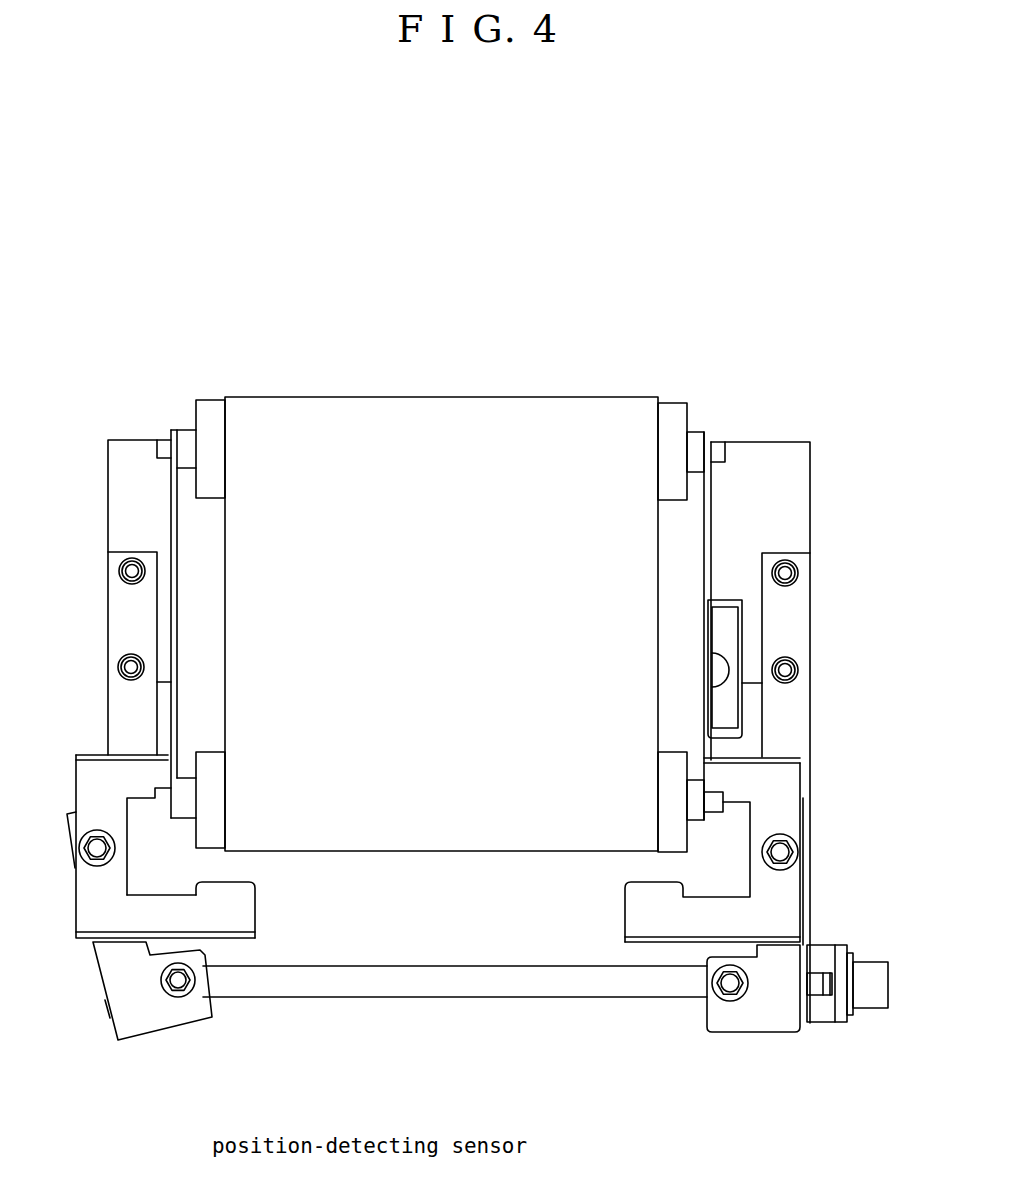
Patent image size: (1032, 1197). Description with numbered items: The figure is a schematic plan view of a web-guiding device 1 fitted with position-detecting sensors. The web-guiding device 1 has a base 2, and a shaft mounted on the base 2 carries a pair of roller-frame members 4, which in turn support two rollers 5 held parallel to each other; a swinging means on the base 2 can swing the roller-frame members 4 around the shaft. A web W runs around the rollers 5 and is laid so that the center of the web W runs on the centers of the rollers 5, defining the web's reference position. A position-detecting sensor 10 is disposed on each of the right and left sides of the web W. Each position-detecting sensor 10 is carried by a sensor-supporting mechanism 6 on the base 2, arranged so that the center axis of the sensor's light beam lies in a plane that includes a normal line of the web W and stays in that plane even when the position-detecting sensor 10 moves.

The web-guiding device 1 is at (121, 328).
The base 2 is at (770, 458).
The roller-frame member 4 is at (690, 524).
The roller 5 is at (212, 415).
The sensor-supporting mechanism 6 is at (155, 1015).
The position-detecting sensor 10 is at (276, 938).
The web W is at (580, 430).